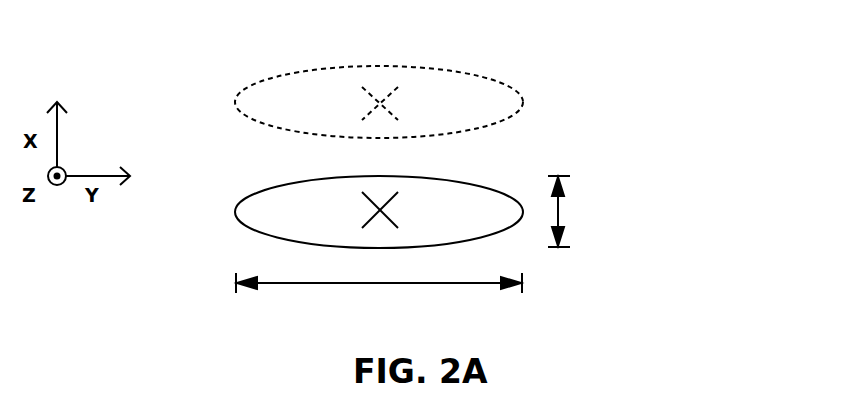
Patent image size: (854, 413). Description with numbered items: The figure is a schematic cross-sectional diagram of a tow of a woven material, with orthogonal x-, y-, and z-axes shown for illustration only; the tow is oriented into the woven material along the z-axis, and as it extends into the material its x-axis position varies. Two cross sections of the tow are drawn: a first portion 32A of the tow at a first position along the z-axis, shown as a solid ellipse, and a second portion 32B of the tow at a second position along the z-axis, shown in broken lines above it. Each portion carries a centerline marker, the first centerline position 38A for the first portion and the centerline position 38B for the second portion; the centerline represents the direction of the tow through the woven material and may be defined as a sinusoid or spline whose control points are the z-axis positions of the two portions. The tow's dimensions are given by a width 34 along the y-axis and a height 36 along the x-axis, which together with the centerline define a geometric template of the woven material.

The first portion of the tow 32A is at (425, 188).
The second portion of the tow 32B is at (425, 80).
The first centerline position 38A is at (288, 187).
The first centerline position 38B is at (288, 79).
The width 34 is at (379, 292).
The height 36 is at (578, 211).